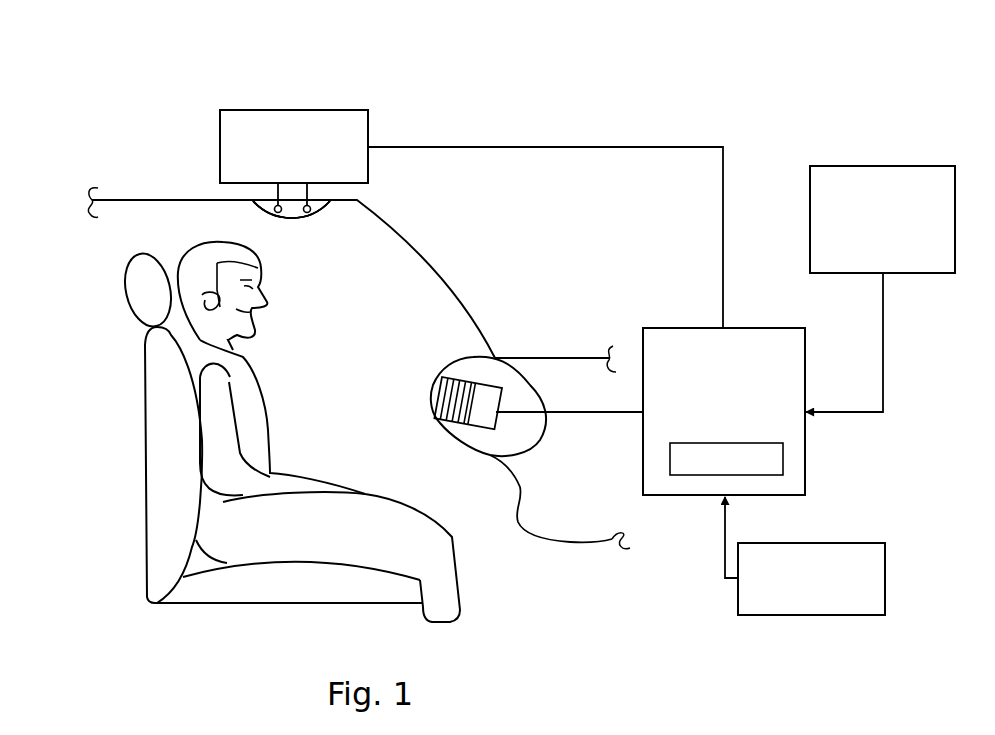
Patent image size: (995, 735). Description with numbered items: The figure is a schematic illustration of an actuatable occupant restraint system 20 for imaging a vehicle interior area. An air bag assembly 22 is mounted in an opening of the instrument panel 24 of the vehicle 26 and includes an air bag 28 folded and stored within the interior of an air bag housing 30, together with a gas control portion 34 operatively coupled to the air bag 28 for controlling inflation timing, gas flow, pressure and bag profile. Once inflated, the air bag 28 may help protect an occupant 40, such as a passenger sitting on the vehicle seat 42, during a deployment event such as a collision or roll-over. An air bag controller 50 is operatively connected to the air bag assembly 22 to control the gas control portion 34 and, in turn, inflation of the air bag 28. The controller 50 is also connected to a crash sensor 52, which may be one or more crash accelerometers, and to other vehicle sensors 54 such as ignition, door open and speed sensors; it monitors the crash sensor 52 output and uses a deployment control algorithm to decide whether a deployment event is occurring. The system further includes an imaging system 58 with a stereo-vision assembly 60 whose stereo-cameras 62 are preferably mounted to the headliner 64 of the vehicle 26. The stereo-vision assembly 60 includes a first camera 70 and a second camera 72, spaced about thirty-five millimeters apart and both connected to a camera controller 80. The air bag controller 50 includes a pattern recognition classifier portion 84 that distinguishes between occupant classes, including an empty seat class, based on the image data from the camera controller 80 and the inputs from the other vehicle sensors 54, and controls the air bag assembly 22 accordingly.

The actuatable occupant restraint system 20 is at (586, 114).
The air bag assembly 22 is at (479, 422).
The instrument panel 24 is at (463, 357).
The vehicle 26 is at (196, 199).
The air bag 28 is at (429, 412).
The air bag housing 30 is at (472, 428).
The gas control portion 34 is at (490, 429).
The occupant 40 is at (243, 357).
The vehicle seat 42 is at (144, 410).
The air bag controller 50 is at (759, 326).
The crash sensor 52 is at (812, 540).
The other vehicle sensors 54 is at (879, 165).
The imaging system 58 is at (308, 71).
The stereo-vision assembly 60 is at (196, 126).
The stereo-cameras 62 is at (257, 215).
The headliner 64 is at (187, 203).
The first camera 70 is at (278, 220).
The second camera 72 is at (314, 219).
The camera controller 80 is at (353, 110).
The pattern recognition classifier portion 84 is at (788, 452).